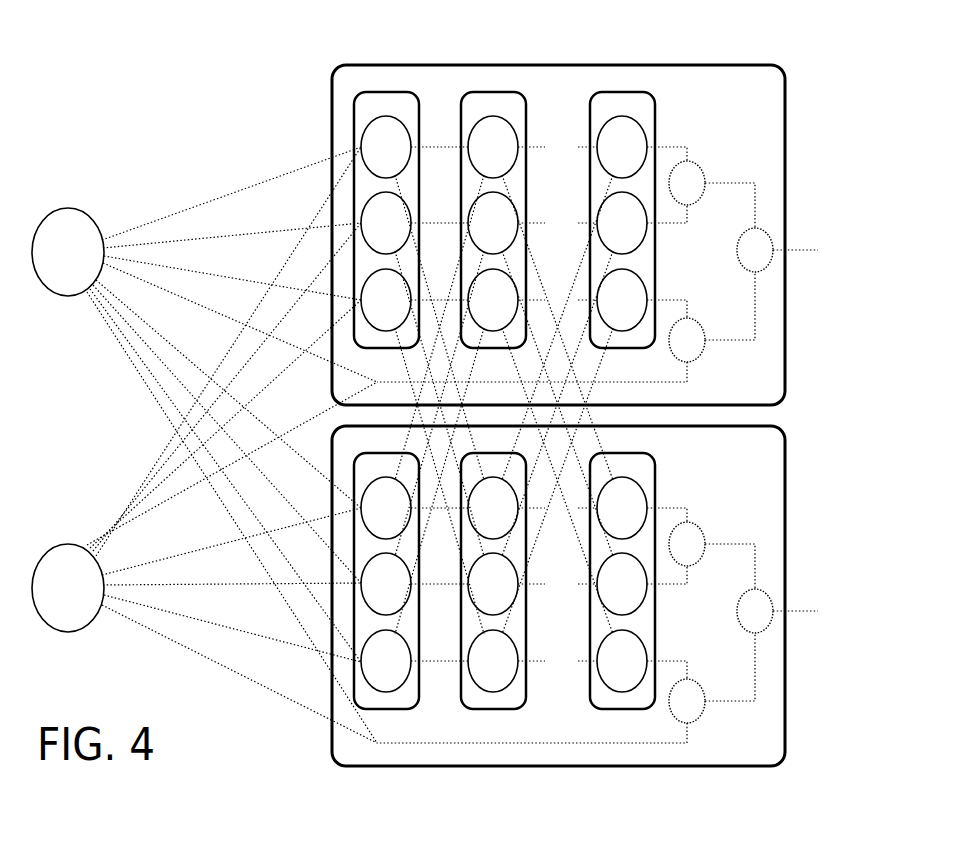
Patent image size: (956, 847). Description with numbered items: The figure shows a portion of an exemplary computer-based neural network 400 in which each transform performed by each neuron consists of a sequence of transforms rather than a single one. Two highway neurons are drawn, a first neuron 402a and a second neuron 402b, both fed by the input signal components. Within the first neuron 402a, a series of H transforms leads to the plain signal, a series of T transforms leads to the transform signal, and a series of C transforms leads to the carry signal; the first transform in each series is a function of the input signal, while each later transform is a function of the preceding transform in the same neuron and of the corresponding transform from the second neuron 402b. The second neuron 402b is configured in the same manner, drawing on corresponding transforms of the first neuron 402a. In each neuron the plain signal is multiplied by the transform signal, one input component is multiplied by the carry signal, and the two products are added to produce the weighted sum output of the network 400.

The computer-based neural network 400 is at (97, 103).
The first neuron 402a is at (800, 103).
The second neuron 402b is at (812, 523).